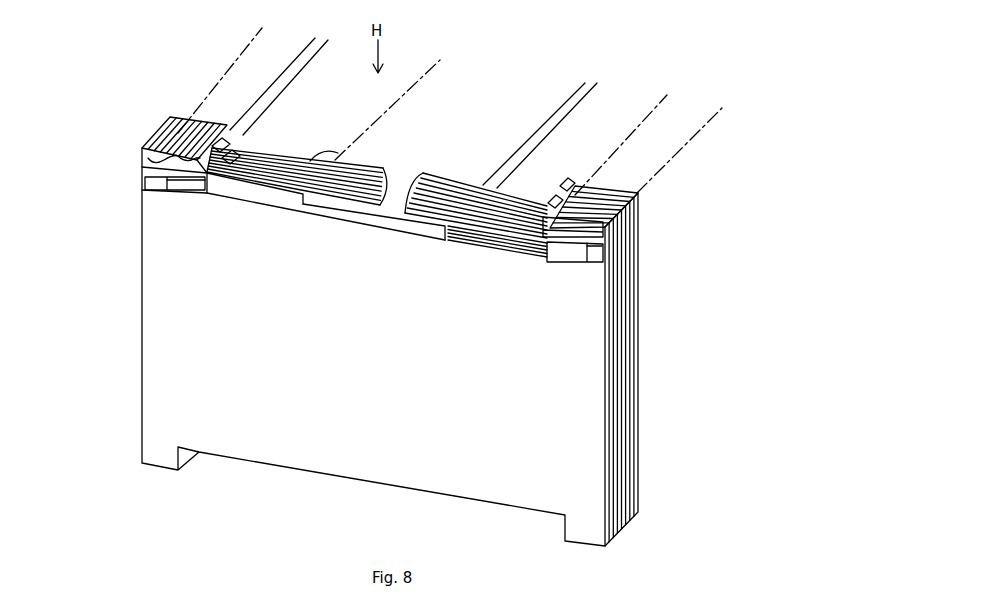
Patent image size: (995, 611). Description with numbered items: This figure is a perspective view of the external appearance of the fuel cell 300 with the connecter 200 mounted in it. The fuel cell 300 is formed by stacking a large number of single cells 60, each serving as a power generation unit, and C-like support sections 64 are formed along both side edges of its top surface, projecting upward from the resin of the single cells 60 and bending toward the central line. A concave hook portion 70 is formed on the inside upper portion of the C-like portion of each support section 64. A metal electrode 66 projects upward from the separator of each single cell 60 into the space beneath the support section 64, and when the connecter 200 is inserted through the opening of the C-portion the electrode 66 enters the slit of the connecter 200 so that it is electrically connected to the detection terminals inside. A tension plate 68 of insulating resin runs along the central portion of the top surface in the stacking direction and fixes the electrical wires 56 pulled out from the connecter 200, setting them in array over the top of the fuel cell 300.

The fuel cell 300 is at (740, 358).
The support section 64 is at (233, 80).
The electrical wire 56 is at (287, 158).
The concave hook portion 70 is at (160, 160).
The electrode 66 is at (182, 184).
The connecter 200 is at (181, 185).
The single cell 60 is at (238, 205).
The tension plate 68 is at (331, 220).